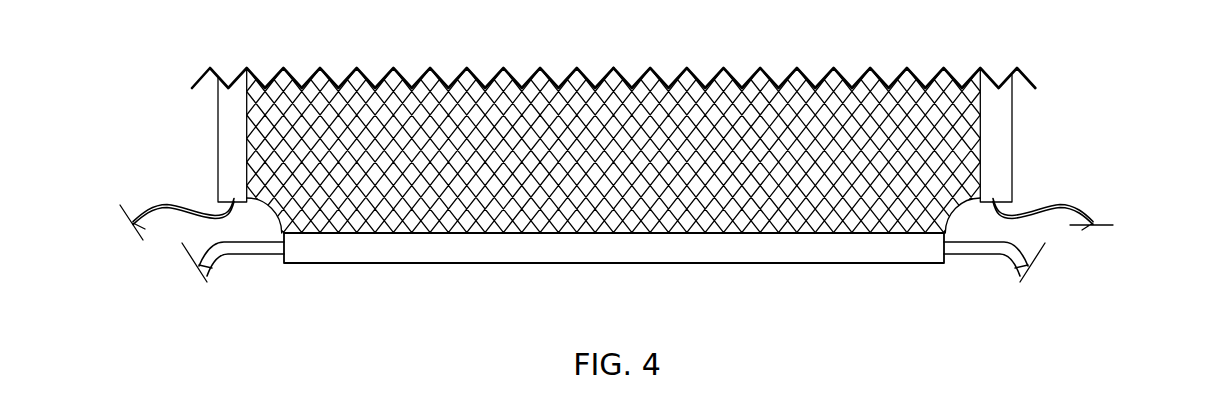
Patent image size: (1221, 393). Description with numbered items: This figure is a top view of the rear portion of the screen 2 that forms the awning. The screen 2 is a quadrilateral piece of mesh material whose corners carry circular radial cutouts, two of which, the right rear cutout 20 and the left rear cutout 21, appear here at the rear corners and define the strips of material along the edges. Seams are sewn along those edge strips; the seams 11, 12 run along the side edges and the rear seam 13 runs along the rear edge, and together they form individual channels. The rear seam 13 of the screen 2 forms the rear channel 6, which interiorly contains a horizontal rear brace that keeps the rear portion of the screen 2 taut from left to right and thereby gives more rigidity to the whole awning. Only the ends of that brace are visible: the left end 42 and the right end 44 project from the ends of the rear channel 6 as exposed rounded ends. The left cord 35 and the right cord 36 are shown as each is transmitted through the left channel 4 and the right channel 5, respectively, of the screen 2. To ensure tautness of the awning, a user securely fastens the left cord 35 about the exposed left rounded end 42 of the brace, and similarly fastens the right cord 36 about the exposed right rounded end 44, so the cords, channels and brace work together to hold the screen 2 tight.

The screen 2 is at (752, 182).
The left channel 4 is at (236, 136).
The right channel 5 is at (1002, 129).
The rear channel 6 is at (508, 248).
The seam 11 is at (247, 72).
The seam 12 is at (982, 72).
The rear seam 13 is at (397, 235).
The right rear cutout 20 is at (950, 217).
The left rear cutout 21 is at (282, 217).
The left cord 35 is at (166, 205).
The right cord 36 is at (1062, 205).
The left end of horizontal brace 42 is at (226, 242).
The right end of horizontal brace 44 is at (1004, 242).